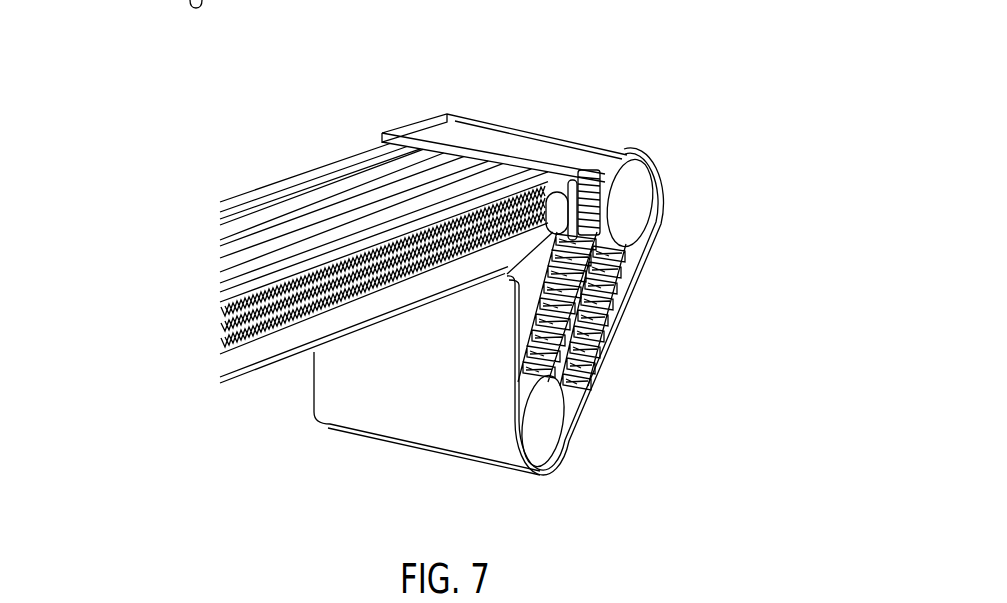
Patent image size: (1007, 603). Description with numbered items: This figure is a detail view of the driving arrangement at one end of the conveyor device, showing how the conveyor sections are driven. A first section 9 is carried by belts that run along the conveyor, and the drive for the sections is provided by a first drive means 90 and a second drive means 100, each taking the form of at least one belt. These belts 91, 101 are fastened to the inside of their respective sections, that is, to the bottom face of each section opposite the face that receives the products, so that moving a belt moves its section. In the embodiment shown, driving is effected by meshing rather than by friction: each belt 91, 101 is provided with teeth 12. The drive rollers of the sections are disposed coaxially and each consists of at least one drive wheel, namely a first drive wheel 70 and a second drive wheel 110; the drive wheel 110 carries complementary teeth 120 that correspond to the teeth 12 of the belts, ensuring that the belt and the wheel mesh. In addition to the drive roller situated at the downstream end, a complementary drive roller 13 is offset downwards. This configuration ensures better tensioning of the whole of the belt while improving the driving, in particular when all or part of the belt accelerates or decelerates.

The first section 9 is at (413, 422).
The teeth 12 is at (601, 347).
The complementary drive roller 13 is at (546, 440).
The first drive wheel 70 is at (635, 214).
The first drive means 90 is at (331, 235).
The belt 91 is at (385, 185).
The second drive means 100 is at (320, 152).
The belt 101 is at (368, 150).
The second drive wheel 110 is at (580, 196).
The complementary teeth 120 is at (608, 266).